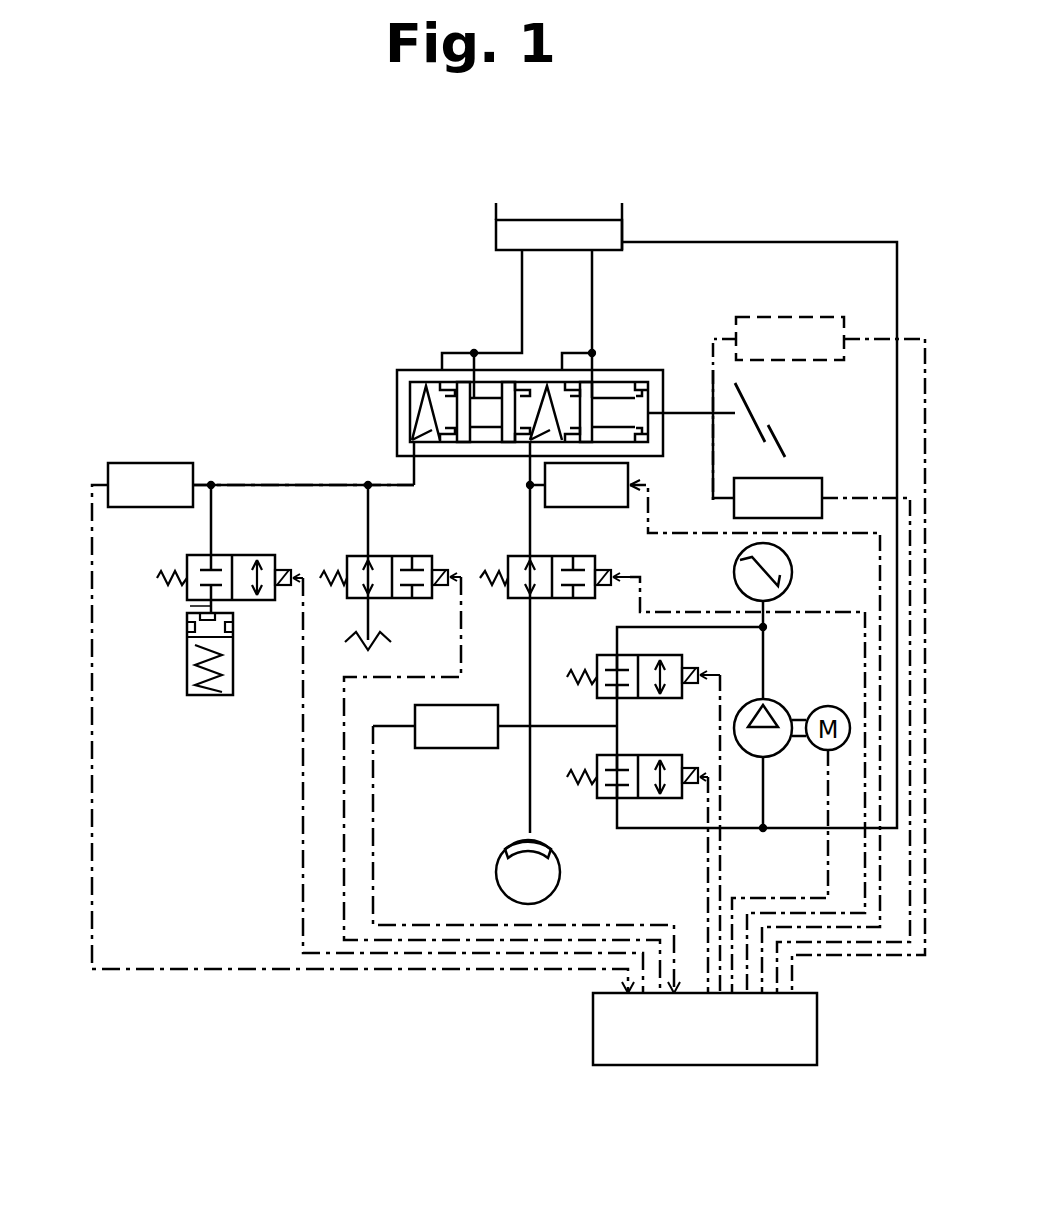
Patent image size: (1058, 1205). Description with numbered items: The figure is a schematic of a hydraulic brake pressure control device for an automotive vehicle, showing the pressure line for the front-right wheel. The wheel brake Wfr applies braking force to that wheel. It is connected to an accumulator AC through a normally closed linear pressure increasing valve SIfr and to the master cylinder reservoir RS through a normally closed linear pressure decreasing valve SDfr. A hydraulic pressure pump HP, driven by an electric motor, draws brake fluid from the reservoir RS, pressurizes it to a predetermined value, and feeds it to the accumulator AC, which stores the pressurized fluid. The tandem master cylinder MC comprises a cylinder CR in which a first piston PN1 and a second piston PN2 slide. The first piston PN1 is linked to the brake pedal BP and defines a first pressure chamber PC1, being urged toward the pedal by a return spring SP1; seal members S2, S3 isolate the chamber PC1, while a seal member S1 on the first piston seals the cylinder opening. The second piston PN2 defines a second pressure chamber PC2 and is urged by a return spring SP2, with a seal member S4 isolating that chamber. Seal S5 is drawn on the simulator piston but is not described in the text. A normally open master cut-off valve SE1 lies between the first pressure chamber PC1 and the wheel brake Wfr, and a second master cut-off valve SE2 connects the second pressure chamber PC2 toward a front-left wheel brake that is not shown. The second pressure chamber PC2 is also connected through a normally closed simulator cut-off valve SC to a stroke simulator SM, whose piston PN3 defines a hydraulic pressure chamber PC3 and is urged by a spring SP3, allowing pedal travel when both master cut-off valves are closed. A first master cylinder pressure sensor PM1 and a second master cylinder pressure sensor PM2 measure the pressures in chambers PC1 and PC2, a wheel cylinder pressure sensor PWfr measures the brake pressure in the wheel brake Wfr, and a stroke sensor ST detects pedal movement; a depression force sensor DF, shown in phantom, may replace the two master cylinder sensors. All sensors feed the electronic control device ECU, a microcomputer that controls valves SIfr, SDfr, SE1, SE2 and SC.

The master cylinder reservoir RS is at (625, 232).
The tandem master cylinder MC is at (393, 366).
The return spring SP1 is at (538, 403).
The return spring SP2 is at (410, 402).
The spring SP3 is at (212, 697).
The first pressure chamber PC1 is at (535, 450).
The second pressure chamber PC2 is at (416, 433).
The hydraulic pressure chamber PC3 is at (190, 606).
The first piston PN1 is at (632, 385).
The second piston PN2 is at (450, 388).
The piston PN3 is at (215, 633).
The seal member S1 is at (620, 407).
The seal member S2 is at (567, 385).
The seal member S3 is at (492, 405).
The seal member S4 is at (447, 392).
The fifth seal S5 is at (235, 628).
The cylinder CR is at (615, 375).
The depression force sensor DF is at (785, 318).
The brake pedal BP is at (772, 432).
The stroke sensor ST is at (805, 480).
The first master cylinder pressure sensor PM1 is at (642, 482).
The second master cylinder pressure sensor PM2 is at (143, 463).
The simulator cut-off valve SC is at (248, 556).
The stroke simulator SM is at (176, 670).
The master cut-off valve SE1 is at (545, 557).
The master cut-off valve SE2 is at (397, 557).
The pressure increasing valve SIfr is at (652, 655).
The pressure decreasing valve SDfr is at (643, 718).
The accumulator AC is at (793, 567).
The hydraulic pressure pump HP is at (780, 705).
The wheel cylinder pressure sensor PWfr is at (455, 748).
The wheel brake Wfr is at (552, 848).
The electronic control device ECU is at (712, 1067).